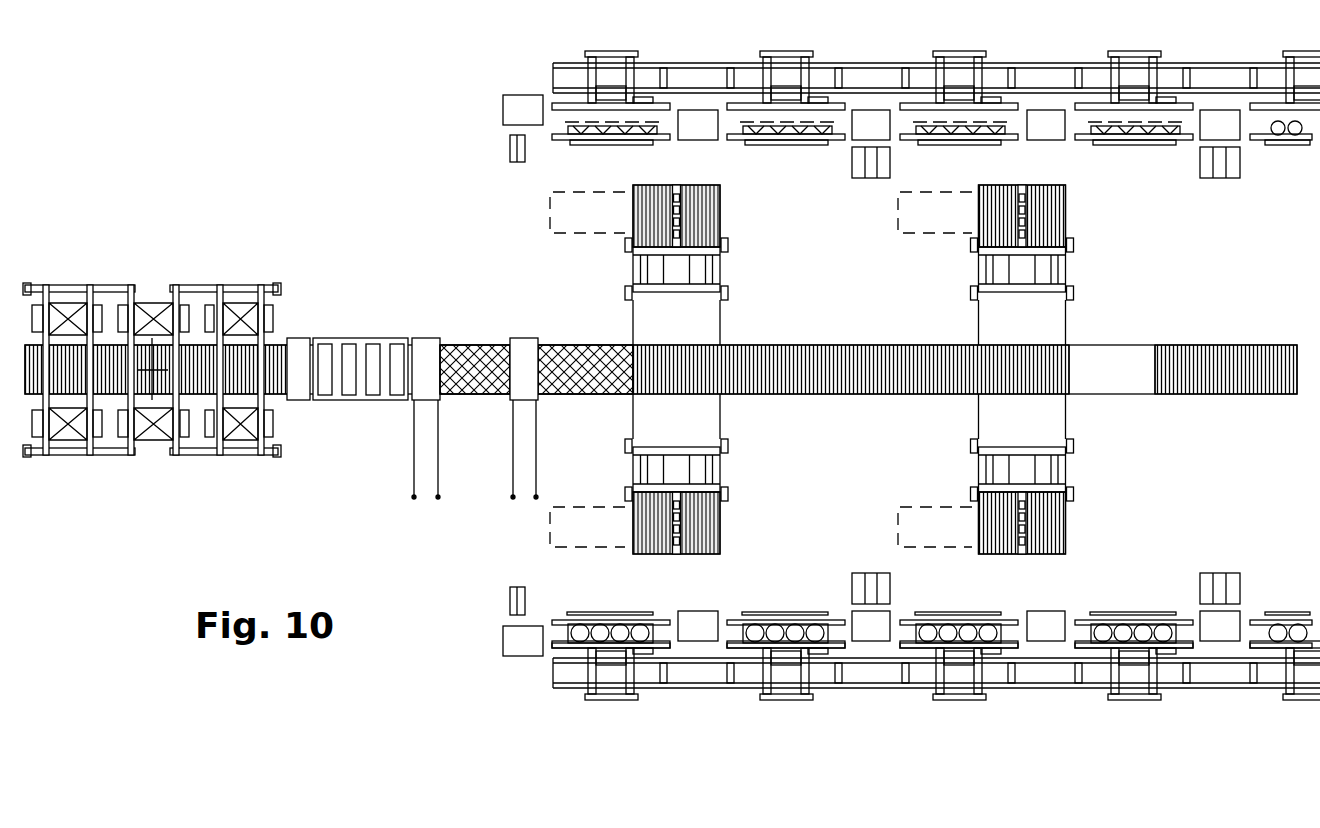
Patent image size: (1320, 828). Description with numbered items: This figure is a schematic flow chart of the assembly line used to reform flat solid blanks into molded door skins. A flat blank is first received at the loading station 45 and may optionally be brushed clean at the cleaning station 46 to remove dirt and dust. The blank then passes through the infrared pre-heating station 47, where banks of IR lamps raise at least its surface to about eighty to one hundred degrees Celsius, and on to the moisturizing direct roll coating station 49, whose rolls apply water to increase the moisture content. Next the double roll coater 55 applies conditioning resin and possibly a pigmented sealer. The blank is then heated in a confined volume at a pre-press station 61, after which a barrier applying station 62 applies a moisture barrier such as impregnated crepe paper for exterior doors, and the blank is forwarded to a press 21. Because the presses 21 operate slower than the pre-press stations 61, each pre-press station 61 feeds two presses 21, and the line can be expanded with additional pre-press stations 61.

The press 21 is at (578, 145).
The loading station 45 is at (181, 275).
The cleaning station 46 is at (298, 338).
The infrared pre-heating station 47 is at (358, 405).
The moisturizing direct roll coating station 49 is at (428, 338).
The double roll coater 55 is at (520, 338).
The pre-press station 61 is at (732, 268).
The barrier applying station 62 is at (598, 233).